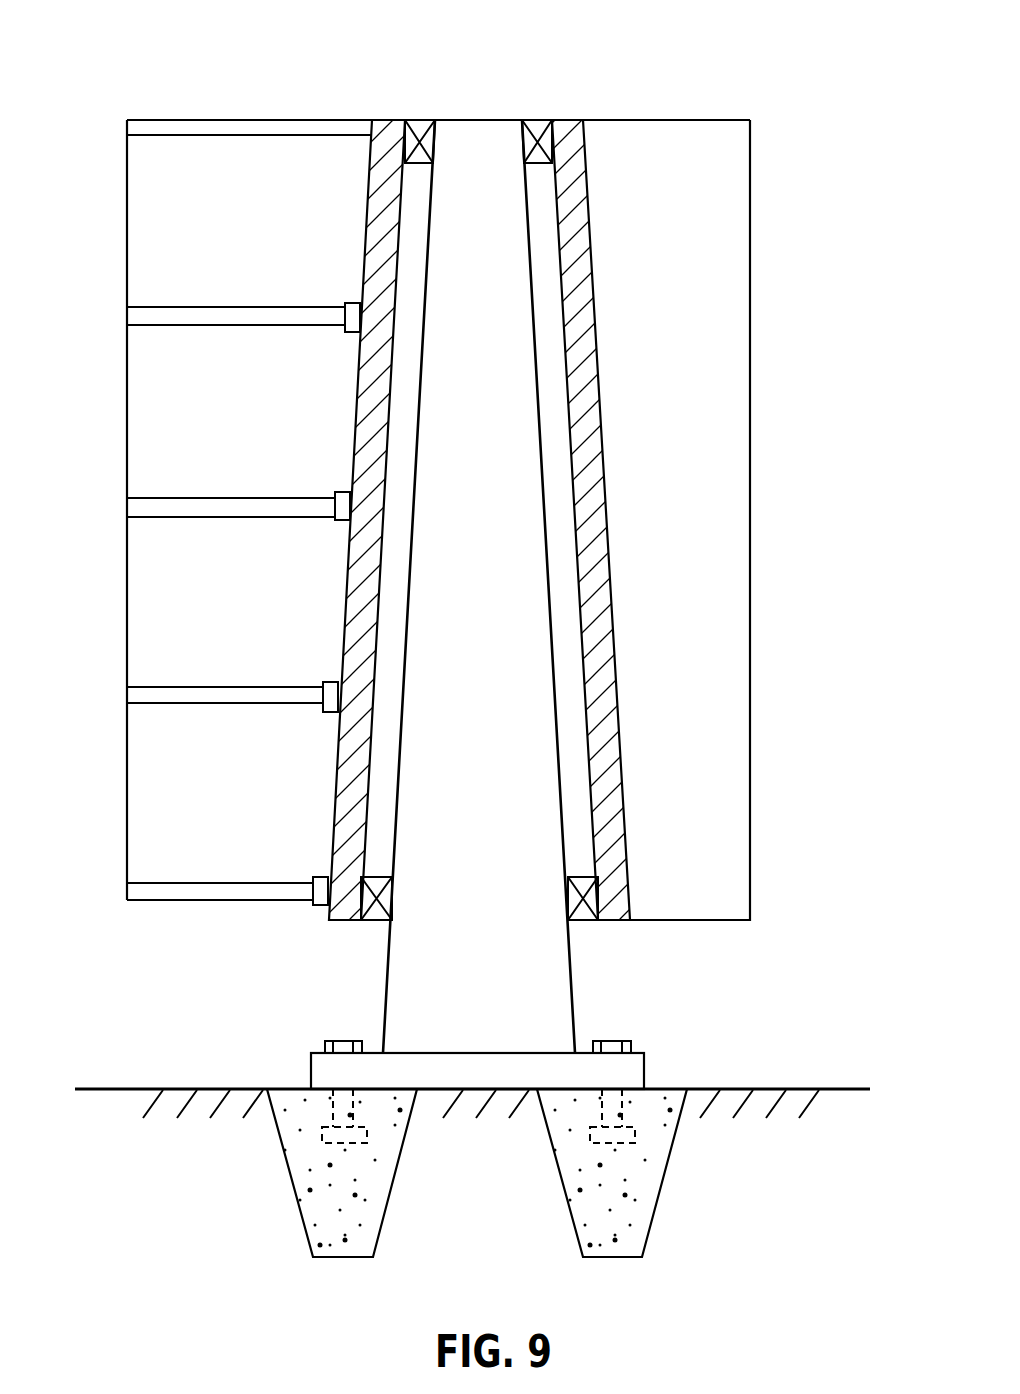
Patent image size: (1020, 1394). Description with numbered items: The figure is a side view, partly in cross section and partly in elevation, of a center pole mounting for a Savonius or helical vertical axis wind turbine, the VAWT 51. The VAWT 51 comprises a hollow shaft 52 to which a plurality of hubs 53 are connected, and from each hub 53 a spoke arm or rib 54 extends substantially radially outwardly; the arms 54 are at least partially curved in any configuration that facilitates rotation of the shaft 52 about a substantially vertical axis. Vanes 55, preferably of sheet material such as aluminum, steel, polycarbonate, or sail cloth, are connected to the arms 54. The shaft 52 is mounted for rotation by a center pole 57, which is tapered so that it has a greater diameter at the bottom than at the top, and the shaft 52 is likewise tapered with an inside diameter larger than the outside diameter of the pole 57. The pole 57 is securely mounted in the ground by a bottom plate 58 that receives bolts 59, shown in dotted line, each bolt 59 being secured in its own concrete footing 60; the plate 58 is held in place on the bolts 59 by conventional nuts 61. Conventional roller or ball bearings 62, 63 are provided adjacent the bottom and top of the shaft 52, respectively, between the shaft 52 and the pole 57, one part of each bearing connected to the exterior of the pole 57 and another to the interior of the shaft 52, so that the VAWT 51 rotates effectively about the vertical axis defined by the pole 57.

The VAWT 51 is at (767, 128).
The hollow shaft 52 is at (385, 246).
The hub 53 is at (383, 125).
The spoke arm 54 is at (197, 123).
The vane 55 is at (161, 573).
The center pole 57 is at (477, 218).
The bottom plate 58 is at (620, 1076).
The bolt 59 is at (600, 1148).
The concrete footing 60 is at (330, 1195).
The nut 61 is at (345, 1045).
The bearing 62 is at (375, 922).
The bearing 63 is at (418, 120).